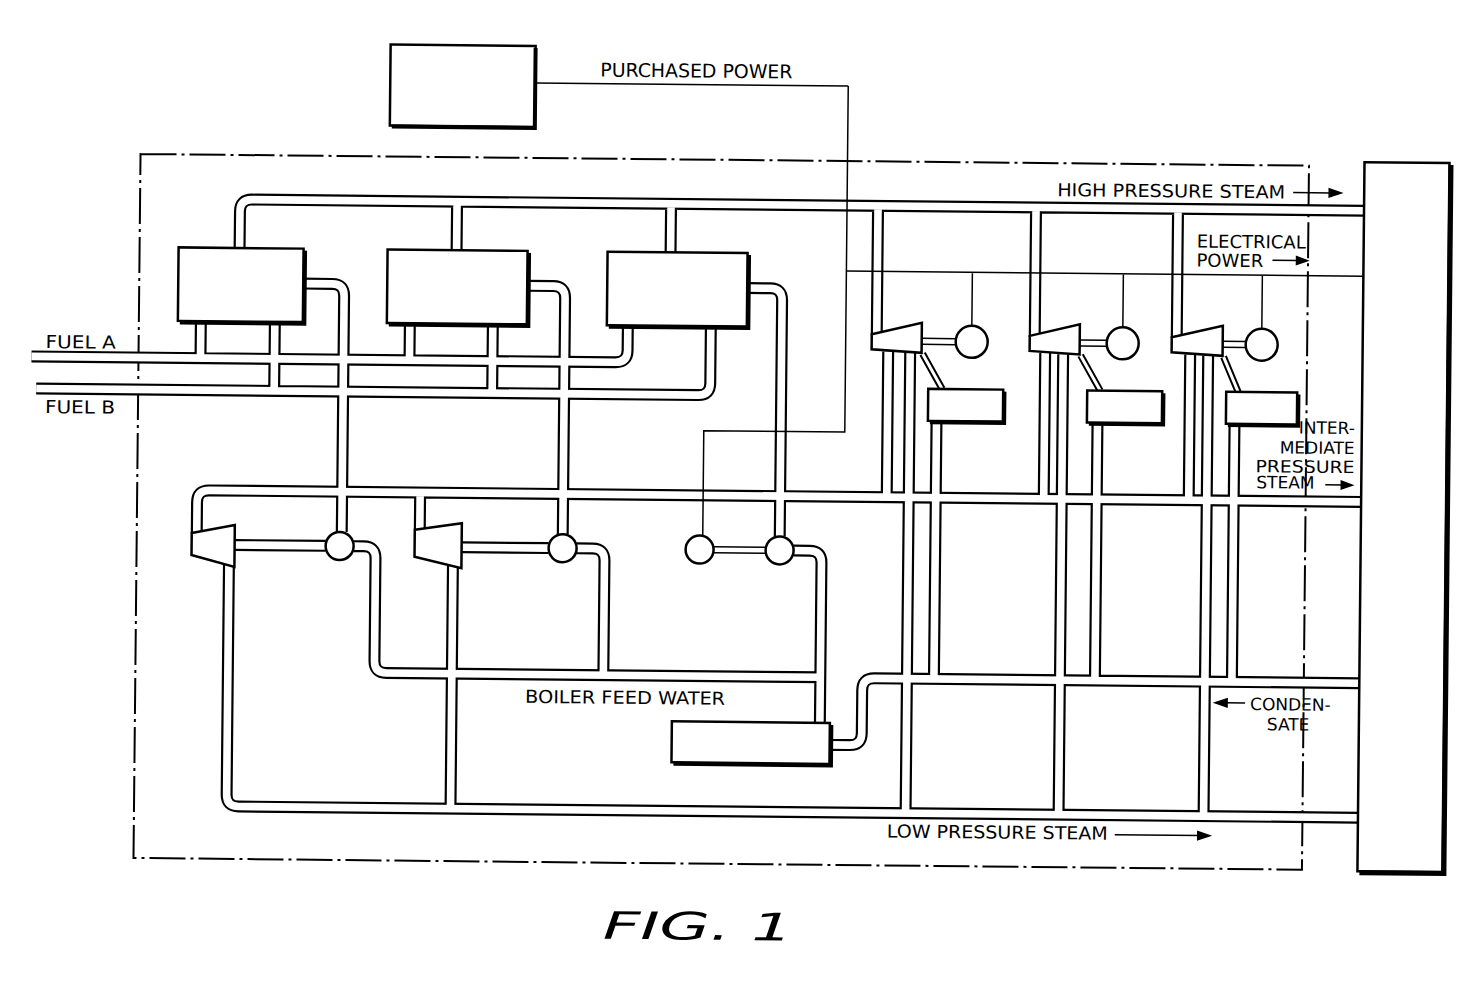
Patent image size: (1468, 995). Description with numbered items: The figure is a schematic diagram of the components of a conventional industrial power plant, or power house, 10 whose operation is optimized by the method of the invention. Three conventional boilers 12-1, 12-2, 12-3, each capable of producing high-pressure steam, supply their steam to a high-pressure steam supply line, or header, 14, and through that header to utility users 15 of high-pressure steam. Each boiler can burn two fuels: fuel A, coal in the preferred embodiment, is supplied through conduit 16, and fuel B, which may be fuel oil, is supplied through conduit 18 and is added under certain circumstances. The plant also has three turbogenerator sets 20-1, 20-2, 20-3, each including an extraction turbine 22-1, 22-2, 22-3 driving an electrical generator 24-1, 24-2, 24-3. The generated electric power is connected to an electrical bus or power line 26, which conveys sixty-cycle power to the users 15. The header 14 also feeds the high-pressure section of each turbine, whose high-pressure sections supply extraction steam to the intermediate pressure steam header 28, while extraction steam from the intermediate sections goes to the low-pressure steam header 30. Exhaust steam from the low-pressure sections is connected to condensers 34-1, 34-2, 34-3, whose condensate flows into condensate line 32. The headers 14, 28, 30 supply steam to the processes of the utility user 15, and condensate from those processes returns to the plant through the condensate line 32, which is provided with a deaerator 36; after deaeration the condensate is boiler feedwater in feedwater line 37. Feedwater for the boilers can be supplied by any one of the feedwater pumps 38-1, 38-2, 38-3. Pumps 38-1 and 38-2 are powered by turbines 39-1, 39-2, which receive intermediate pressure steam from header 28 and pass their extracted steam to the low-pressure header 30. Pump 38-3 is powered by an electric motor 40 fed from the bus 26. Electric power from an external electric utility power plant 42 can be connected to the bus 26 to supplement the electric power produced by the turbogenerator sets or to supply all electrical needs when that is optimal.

The power plant 10 is at (137, 768).
The boiler 12-1 is at (273, 253).
The boiler 12-2 is at (497, 253).
The boiler 12-3 is at (705, 253).
The high-pressure steam supply header 14 is at (532, 199).
The utility users 15 is at (1408, 156).
The fuel A conduit 16 is at (176, 357).
The fuel B conduit 18 is at (176, 390).
The turbogenerator set 20-1 is at (934, 328).
The turbogenerator set 20-2 is at (1077, 329).
The turbogenerator set 20-3 is at (1219, 331).
The extraction turbine 22-1 is at (873, 350).
The extraction turbine 22-2 is at (1030, 348).
The extraction turbine 22-3 is at (1172, 347).
The electrical generator 24-1 is at (982, 329).
The electrical generator 24-2 is at (1133, 329).
The electrical generator 24-3 is at (1272, 329).
The electrical bus 26 is at (1088, 270).
The intermediate pressure steam header 28 is at (989, 502).
The low-pressure steam header 30 is at (619, 805).
The condensate line 32 is at (985, 672).
The condenser 34-1 is at (968, 420).
The condenser 34-2 is at (1122, 419).
The condenser 34-3 is at (1298, 404).
The deaerator 36 is at (674, 734).
The feedwater line 37 is at (495, 683).
The feedwater pump 38-1 is at (328, 541).
The feedwater pump 38-2 is at (553, 536).
The feedwater pump 38-3 is at (763, 537).
The turbine 39-1 is at (212, 567).
The turbine 39-2 is at (432, 565).
The electric motor 40 is at (688, 538).
The electric utility power plant 42 is at (386, 70).